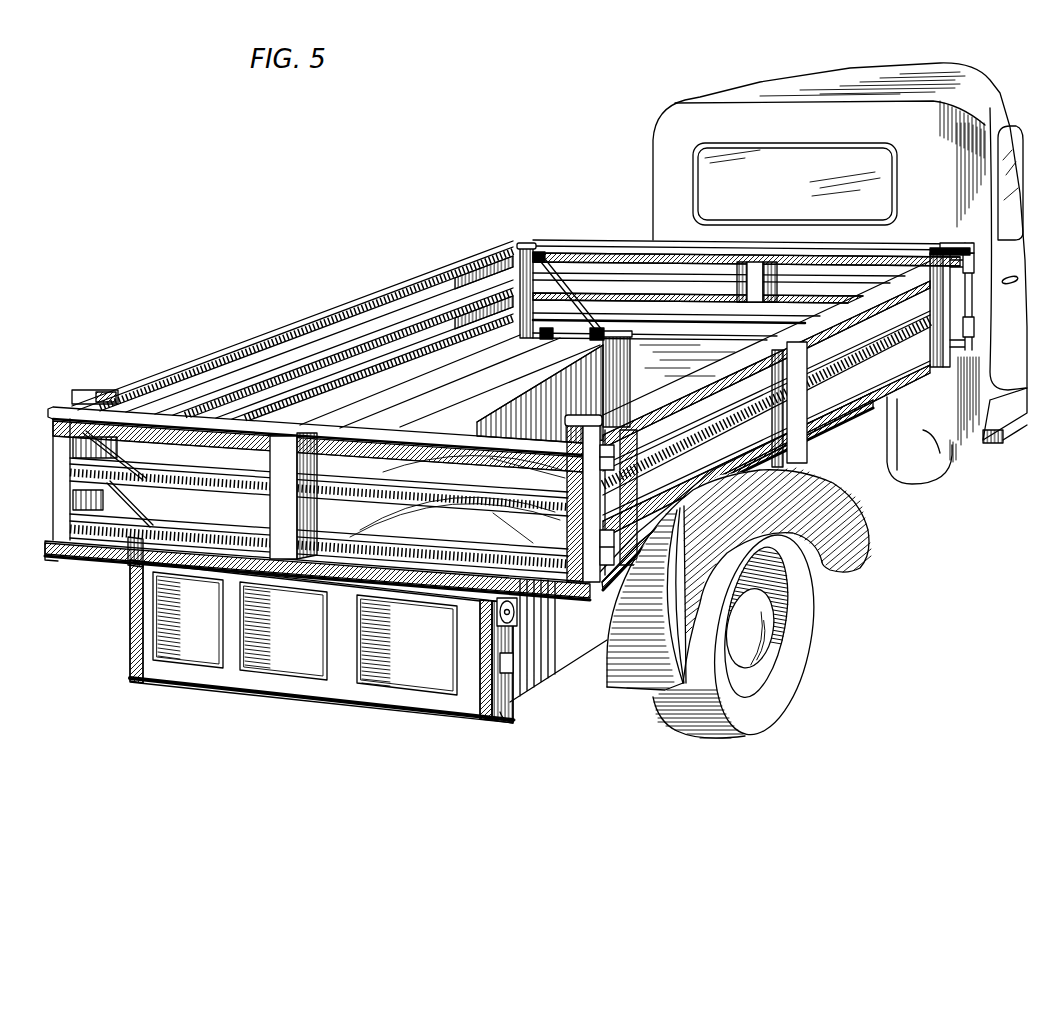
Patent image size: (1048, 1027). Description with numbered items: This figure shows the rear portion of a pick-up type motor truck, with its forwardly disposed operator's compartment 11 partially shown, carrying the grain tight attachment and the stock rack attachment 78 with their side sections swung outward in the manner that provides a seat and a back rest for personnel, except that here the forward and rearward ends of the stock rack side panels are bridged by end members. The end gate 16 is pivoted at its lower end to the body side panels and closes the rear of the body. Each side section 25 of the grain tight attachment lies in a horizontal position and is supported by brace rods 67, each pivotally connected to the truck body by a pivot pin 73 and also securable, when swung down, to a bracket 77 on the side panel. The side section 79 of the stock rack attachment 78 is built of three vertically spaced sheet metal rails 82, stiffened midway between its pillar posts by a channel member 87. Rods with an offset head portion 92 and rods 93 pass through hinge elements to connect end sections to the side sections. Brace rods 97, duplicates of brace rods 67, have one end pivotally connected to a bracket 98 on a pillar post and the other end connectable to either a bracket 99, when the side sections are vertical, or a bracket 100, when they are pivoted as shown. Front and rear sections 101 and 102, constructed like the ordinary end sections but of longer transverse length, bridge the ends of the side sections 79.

The operator's compartment 11 is at (752, 92).
The end gate 16 is at (400, 673).
The side section 25 is at (453, 405).
The brace rod 67 is at (545, 585).
The pivot pin 73 is at (517, 617).
The bracket 77 is at (517, 702).
The stock rack attachment 78 is at (427, 259).
The side section 79 is at (175, 362).
The sheet metal rail 82 is at (663, 393).
The channel member 87 is at (810, 435).
The offset head portion 92 is at (615, 545).
The rod 93 is at (972, 300).
The brace rod 97 is at (547, 250).
The bracket 98 is at (528, 222).
The bracket 99 is at (537, 333).
The bracket 100 is at (590, 340).
The front section 101 is at (629, 234).
The rear section 102 is at (204, 404).